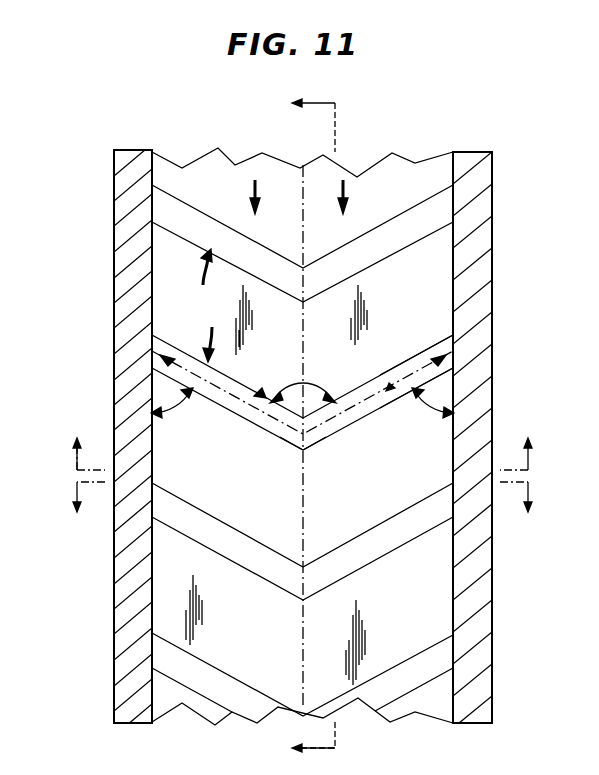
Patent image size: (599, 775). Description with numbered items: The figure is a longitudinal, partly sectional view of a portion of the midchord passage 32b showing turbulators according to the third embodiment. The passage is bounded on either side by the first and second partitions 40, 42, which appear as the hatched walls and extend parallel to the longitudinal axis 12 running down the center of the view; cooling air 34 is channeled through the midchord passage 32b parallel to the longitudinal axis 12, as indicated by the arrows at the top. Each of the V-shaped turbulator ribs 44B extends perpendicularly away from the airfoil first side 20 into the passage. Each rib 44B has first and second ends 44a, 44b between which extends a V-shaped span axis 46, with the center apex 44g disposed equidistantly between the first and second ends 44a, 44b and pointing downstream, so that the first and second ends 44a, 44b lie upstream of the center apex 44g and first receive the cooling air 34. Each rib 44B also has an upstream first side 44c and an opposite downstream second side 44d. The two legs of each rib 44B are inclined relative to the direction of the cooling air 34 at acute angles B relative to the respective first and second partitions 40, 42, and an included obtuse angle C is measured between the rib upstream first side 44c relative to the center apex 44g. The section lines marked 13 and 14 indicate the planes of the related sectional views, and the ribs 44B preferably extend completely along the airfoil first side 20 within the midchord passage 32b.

The longitudinal axis 12 is at (303, 655).
The section line 13 is at (298, 427).
The section line 14 is at (302, 513).
The airfoil first side 20 is at (182, 704).
The midchord passage 32b is at (302, 599).
The cooling air 34 is at (250, 190).
The first partition 40 is at (114, 648).
The second partition 42 is at (492, 656).
The V-shaped turbulator rib 44B is at (302, 273).
The rib first end 44a is at (152, 343).
The rib second end 44b is at (453, 338).
The rib upstream first side 44c is at (428, 349).
The rib downstream second side 44d is at (385, 410).
The center apex 44g is at (303, 450).
The span axis 46 is at (350, 408).
The acute angle B is at (183, 404).
The included obtuse angle C is at (312, 388).